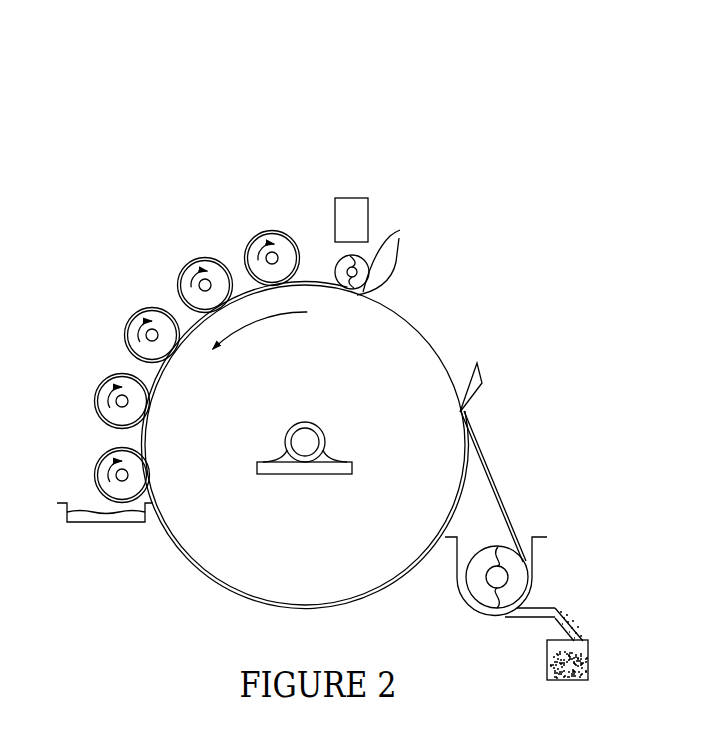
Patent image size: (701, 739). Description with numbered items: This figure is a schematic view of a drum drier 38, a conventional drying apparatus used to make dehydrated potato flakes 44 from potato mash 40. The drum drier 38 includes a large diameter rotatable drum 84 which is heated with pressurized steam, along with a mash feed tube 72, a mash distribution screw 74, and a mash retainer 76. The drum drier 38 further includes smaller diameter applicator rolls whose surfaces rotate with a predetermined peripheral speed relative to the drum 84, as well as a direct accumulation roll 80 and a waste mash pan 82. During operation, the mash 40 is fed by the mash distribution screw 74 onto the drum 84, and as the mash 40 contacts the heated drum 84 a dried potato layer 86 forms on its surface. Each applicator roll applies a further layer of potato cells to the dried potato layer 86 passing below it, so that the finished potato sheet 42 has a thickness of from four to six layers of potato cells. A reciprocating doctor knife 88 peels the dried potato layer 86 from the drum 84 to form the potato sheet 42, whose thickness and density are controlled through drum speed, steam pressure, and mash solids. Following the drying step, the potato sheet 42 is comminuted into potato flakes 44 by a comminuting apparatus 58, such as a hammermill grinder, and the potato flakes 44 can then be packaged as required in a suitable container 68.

The drum drier 38 is at (88, 340).
The mash 40 is at (352, 182).
The potato sheet 42 is at (500, 502).
The dehydrated potato flakes 44 is at (572, 625).
The comminuting apparatus 58 is at (535, 563).
The container 68 is at (547, 668).
The mash feed tube 72 is at (343, 208).
The mash distribution screw 74 is at (400, 230).
The mash retainer 76 is at (249, 244).
The direct accumulation roll 80 is at (97, 462).
The waste mash pan 82 is at (105, 522).
The rotatable drum 84 is at (382, 325).
The dried potato layer 86 is at (190, 322).
The reciprocating doctor knife 88 is at (480, 373).